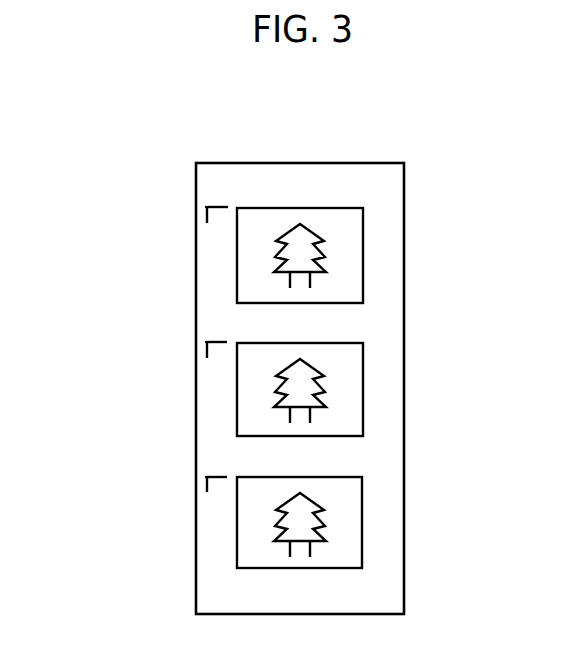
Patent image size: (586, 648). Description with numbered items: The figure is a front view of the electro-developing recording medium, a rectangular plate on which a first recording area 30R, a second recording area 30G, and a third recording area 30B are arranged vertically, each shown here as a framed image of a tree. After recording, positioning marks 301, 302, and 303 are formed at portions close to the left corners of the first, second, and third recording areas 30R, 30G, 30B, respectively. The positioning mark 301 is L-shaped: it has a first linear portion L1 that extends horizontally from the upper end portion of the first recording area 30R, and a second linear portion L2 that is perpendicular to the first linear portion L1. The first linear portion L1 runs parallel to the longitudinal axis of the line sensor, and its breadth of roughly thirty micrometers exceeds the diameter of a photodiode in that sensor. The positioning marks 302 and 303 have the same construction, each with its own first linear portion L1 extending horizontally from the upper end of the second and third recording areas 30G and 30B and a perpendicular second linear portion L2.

The positioning mark 301 is at (209, 203).
The positioning mark 302 is at (200, 347).
The positioning mark 303 is at (200, 481).
The first linear portion L1 is at (221, 207).
The second linear portion L2 is at (207, 213).
The first recording area 30R is at (345, 257).
The second recording area 30G is at (345, 392).
The third recording area 30B is at (343, 519).